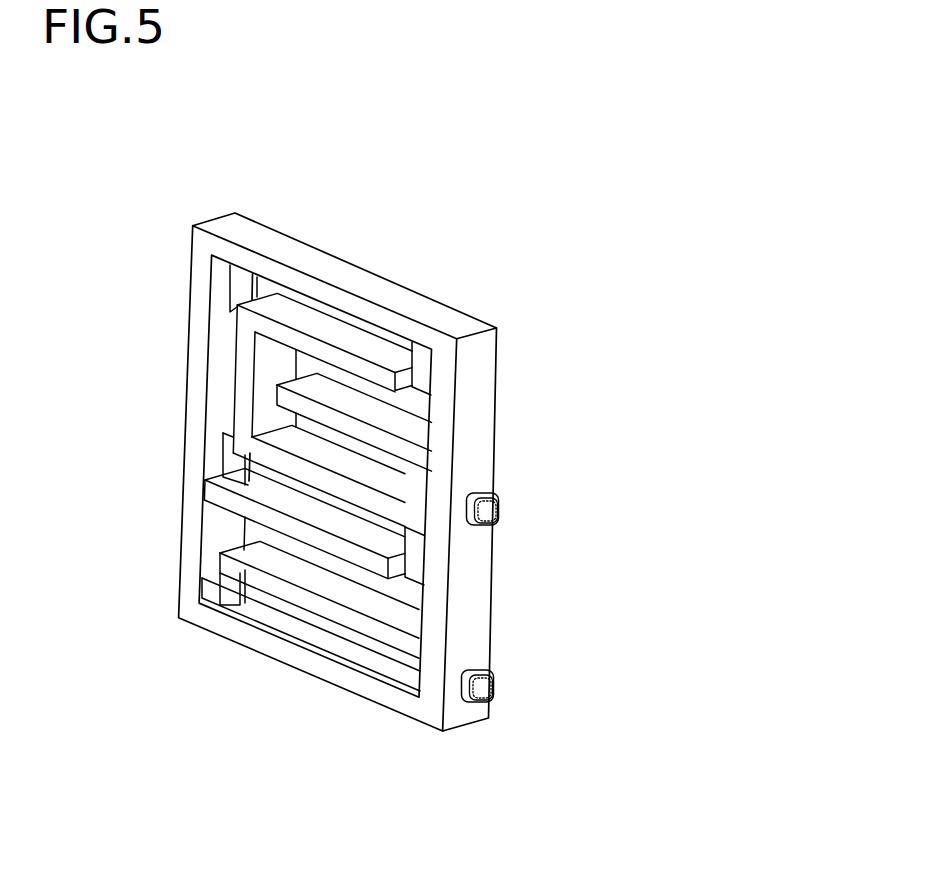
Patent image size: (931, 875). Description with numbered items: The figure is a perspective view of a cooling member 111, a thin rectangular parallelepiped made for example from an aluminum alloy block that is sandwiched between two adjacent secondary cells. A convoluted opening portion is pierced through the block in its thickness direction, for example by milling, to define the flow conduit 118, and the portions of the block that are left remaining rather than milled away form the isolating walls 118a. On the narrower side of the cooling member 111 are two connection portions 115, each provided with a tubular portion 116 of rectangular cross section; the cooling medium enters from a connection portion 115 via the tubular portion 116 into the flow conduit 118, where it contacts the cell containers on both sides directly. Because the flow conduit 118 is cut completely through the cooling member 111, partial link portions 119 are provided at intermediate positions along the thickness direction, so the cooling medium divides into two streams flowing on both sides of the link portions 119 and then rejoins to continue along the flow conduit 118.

The cooling member 111 is at (519, 267).
The connection portion 115 is at (495, 496).
The tubular portion 116 is at (498, 520).
The flow conduit 118 is at (220, 532).
The isolating wall 118a is at (382, 378).
The link portion 119 is at (238, 277).